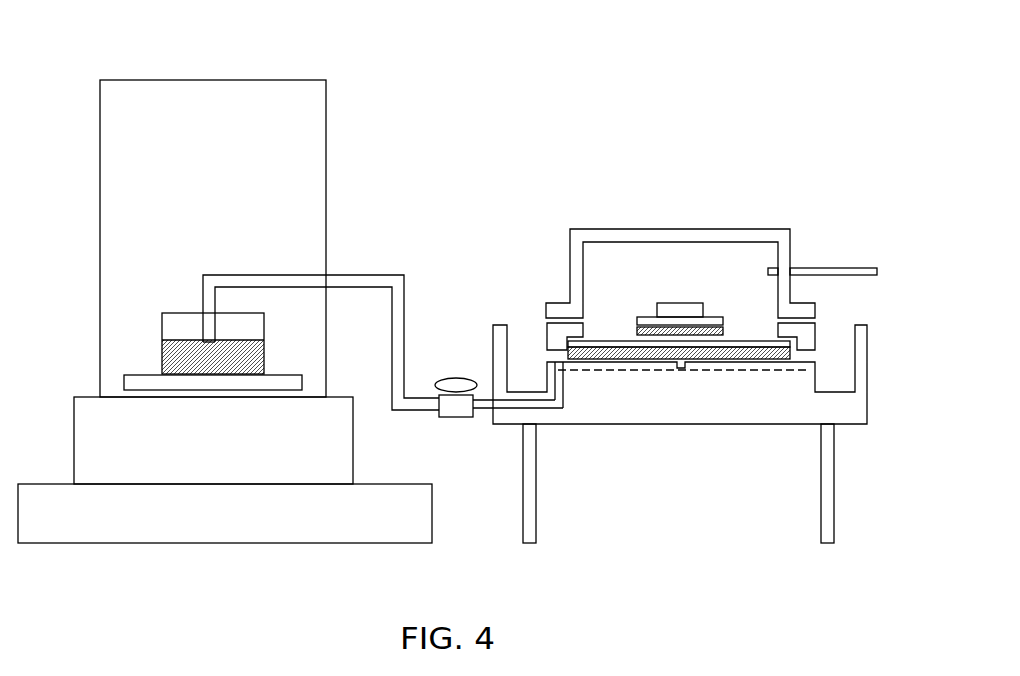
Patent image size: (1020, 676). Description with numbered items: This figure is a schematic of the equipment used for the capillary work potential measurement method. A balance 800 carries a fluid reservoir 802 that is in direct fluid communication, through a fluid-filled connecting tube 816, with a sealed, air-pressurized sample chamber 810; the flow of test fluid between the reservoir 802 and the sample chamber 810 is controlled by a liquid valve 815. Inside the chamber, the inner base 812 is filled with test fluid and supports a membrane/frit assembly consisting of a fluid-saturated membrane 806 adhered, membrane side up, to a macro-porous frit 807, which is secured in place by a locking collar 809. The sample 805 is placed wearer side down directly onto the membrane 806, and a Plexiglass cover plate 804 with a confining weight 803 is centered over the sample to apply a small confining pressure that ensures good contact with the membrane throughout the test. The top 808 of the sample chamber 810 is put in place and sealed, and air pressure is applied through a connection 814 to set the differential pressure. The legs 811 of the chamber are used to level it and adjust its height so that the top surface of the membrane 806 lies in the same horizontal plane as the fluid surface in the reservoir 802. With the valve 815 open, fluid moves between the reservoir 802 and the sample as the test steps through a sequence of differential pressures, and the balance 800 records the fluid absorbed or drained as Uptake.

The balance 800 is at (140, 68).
The fluid reservoir 802 is at (160, 330).
The weight 803 is at (680, 303).
The Plexiglass plate 804 is at (649, 317).
The sample 805 is at (637, 332).
The membrane 806 is at (612, 341).
The macro-porous frit 807 is at (565, 347).
The top 808 is at (723, 228).
The locking collar 809 is at (815, 337).
The sample chamber 810 is at (680, 103).
The legs 811 is at (821, 522).
The inner base 812 is at (738, 377).
The connection 814 is at (846, 268).
The valve 815 is at (455, 418).
The connecting tube 816 is at (388, 274).